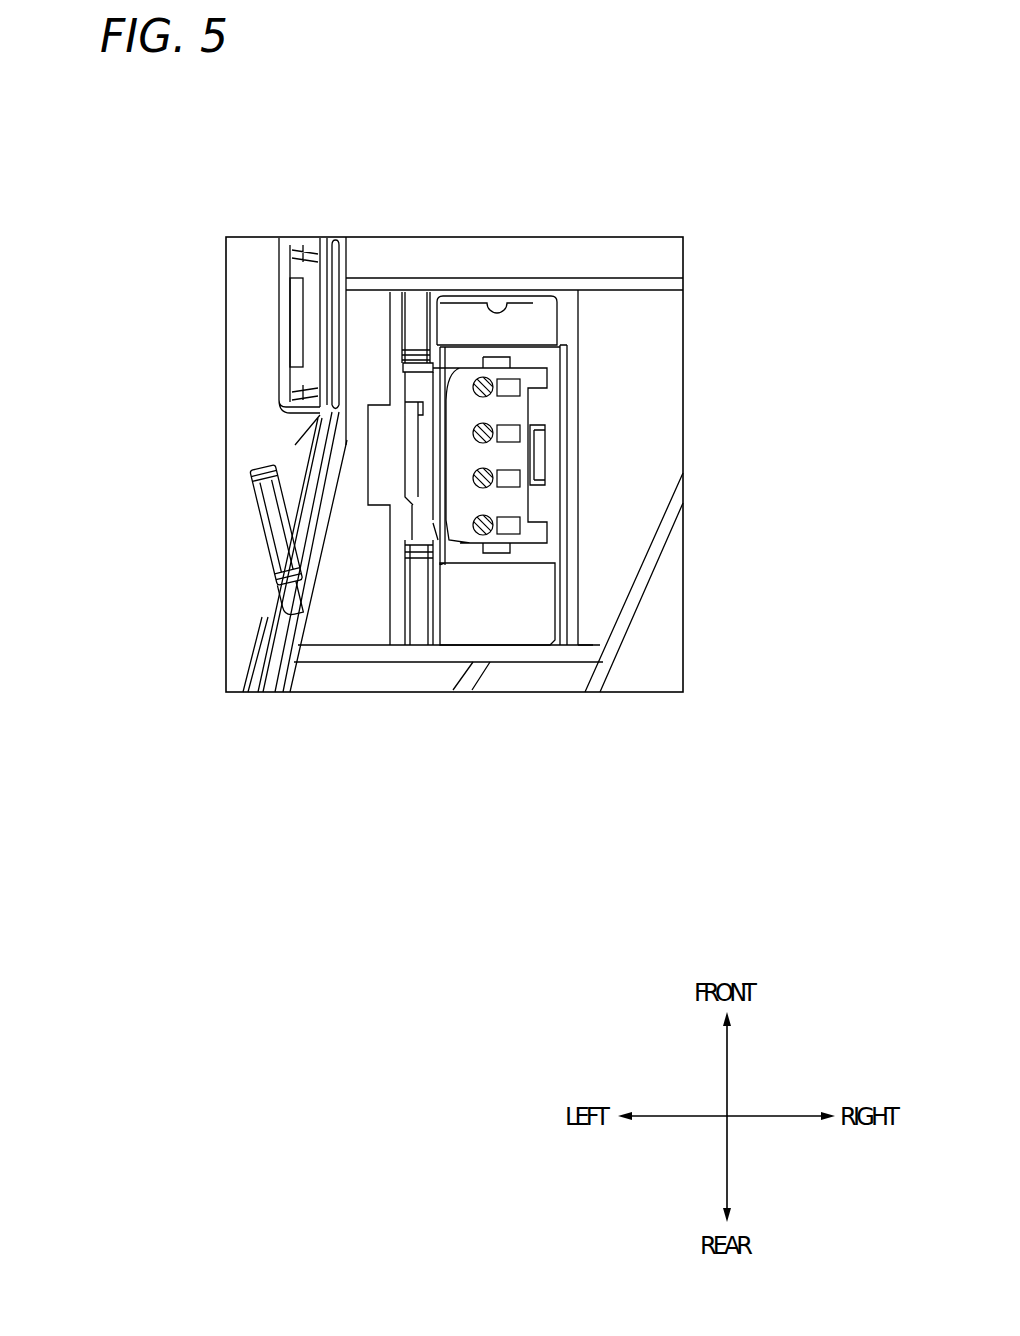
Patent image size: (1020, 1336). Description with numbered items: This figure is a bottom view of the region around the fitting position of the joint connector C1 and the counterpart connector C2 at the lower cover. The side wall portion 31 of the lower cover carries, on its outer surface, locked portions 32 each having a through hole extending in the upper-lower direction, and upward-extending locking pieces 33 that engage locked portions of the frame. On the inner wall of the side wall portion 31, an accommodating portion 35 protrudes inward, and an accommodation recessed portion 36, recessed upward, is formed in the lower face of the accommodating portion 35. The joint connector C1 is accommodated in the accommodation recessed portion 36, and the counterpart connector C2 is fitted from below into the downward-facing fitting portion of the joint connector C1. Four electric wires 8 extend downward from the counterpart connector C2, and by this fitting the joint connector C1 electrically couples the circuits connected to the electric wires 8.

The electric wires 8 is at (516, 524).
The side wall portion 31 is at (305, 449).
The locked portions 32 is at (287, 305).
The locking pieces 33 is at (256, 543).
The accommodating portion 35 is at (569, 569).
The accommodation recessed portion 36 is at (488, 301).
The joint connector C1 is at (413, 528).
The counterpart connector C2 is at (456, 534).